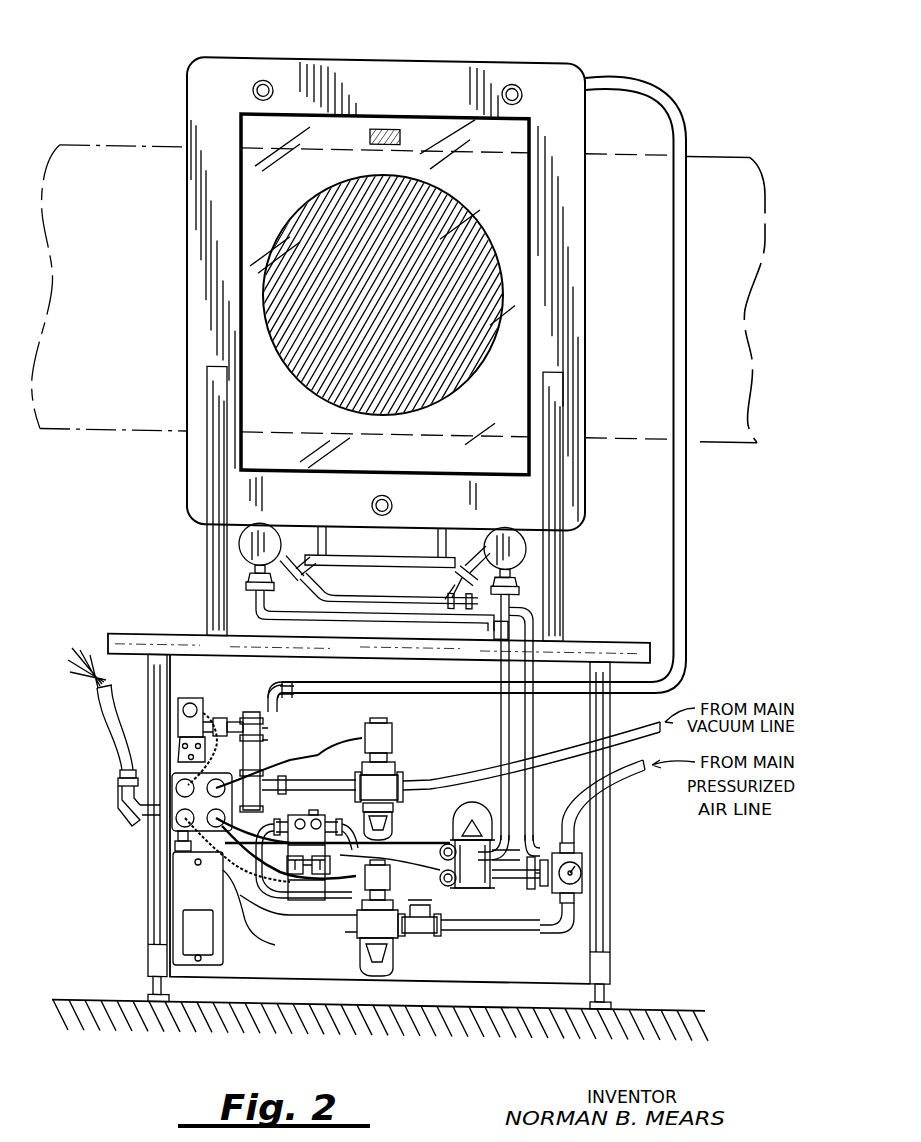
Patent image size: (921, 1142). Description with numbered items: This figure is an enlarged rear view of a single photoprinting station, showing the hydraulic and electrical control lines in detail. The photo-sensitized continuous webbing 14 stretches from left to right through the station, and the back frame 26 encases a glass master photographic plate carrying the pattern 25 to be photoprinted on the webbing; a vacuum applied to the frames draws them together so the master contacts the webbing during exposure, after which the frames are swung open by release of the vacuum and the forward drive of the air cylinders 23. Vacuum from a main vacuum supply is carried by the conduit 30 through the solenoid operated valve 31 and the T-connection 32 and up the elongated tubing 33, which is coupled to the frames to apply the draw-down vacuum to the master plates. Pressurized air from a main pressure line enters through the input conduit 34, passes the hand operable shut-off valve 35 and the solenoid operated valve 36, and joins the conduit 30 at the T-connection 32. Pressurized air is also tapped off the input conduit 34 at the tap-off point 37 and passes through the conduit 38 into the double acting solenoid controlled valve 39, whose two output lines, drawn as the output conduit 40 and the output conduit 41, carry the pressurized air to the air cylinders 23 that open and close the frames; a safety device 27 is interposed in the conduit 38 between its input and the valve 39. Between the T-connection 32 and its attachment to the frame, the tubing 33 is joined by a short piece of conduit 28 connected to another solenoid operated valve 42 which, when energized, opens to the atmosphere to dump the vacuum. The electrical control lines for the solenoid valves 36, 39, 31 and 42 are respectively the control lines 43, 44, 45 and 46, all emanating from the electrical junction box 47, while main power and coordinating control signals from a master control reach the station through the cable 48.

The continuous webbing 14 is at (100, 165).
The back frame 26 is at (430, 78).
The pattern 25 is at (400, 306).
The elongated tubing 33 is at (690, 487).
The air cylinders 23 is at (238, 548).
The solenoid operated valve 42 is at (188, 700).
The short piece of conduit 28 is at (240, 715).
The electrical control line 45 is at (316, 752).
The electrical control line 46 is at (222, 738).
The T-connection 32 is at (282, 764).
The solenoid operated valve 31 is at (395, 742).
The conduit 30 is at (455, 790).
The output conduit 41 is at (500, 712).
The pipe 40 is at (534, 712).
The cable 48 is at (110, 728).
The electrical junction box 47 is at (180, 803).
The safety device 27 is at (320, 815).
The electrical control line 44 is at (400, 835).
The double acting solenoid controlled valve 39 is at (410, 842).
The conduit 38 is at (428, 872).
The input conduit 34 is at (570, 805).
The hand operable shut-off valve 35 is at (583, 856).
The electrical control line 43 is at (225, 936).
The solenoid operated valve 36 is at (372, 898).
The tap-off point 37 is at (420, 935).